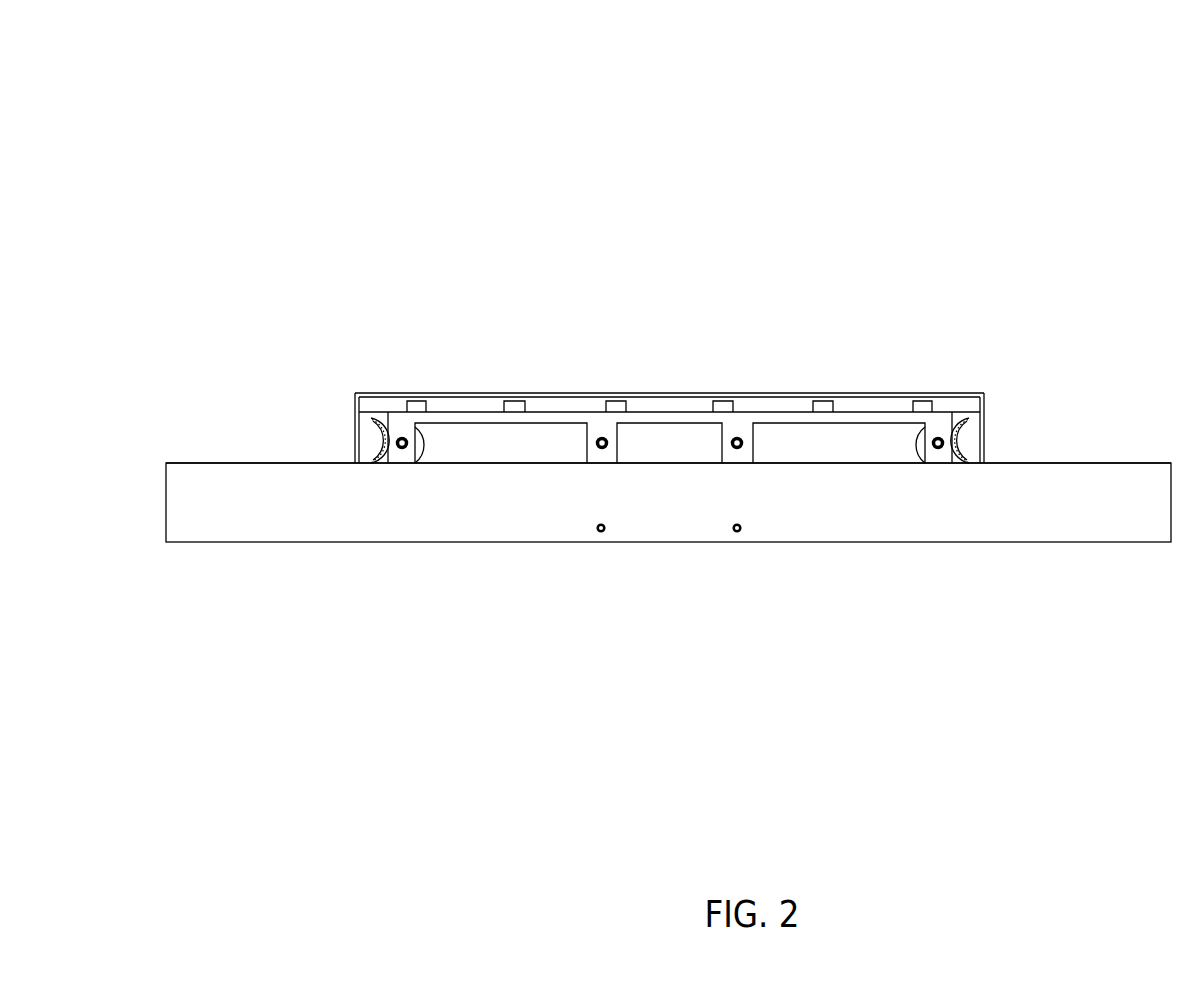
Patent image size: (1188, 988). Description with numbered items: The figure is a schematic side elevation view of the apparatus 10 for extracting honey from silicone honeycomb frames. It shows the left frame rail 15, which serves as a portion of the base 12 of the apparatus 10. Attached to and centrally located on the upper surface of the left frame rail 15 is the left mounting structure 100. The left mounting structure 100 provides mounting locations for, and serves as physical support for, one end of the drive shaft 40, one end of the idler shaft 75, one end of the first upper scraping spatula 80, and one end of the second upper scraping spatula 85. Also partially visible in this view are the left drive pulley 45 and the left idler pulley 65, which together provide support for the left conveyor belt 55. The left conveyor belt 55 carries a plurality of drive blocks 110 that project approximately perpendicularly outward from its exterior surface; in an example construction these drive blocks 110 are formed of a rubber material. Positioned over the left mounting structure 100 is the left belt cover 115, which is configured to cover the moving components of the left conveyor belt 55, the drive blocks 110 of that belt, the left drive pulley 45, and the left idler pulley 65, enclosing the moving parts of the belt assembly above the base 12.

The apparatus 10 is at (275, 178).
The base 12 is at (387, 544).
The left frame rail 15 is at (869, 510).
The drive shaft 40 is at (941, 438).
The left drive pulley 45 is at (963, 432).
The left conveyor belt 55 is at (558, 415).
The left idler pulley 65 is at (376, 432).
The idler shaft 75 is at (400, 438).
The first upper scraping spatula 80 is at (740, 438).
The second upper scraping spatula 85 is at (605, 438).
The left mounting structure 100 is at (466, 423).
The drive blocks 110 is at (513, 401).
The left belt cover 115 is at (432, 393).